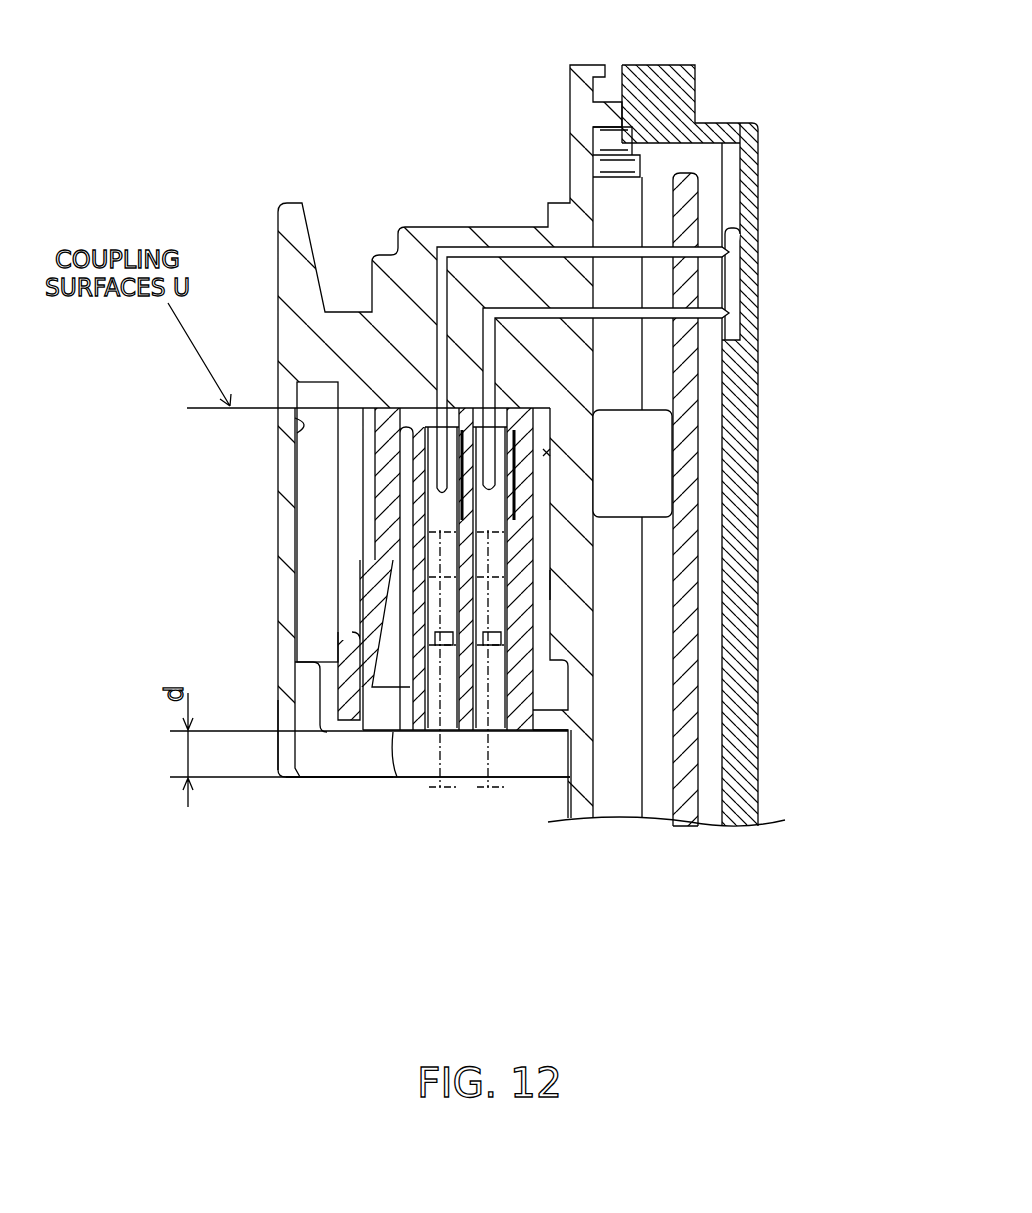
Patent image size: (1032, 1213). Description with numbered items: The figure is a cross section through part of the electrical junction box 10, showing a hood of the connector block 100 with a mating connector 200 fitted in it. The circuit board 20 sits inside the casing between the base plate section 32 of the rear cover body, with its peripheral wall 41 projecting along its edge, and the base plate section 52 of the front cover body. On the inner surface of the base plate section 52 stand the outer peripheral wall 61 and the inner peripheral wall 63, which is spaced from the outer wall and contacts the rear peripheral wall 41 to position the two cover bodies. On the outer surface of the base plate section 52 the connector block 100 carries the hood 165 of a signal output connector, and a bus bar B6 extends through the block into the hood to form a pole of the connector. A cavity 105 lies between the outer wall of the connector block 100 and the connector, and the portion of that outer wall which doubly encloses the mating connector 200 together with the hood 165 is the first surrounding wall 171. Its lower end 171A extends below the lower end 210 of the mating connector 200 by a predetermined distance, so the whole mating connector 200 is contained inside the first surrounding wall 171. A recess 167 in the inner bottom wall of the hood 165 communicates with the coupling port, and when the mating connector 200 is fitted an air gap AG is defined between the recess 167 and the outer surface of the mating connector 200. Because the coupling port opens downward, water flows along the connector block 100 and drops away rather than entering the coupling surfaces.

The electrical junction box 10 is at (793, 198).
The connector block 100 is at (415, 232).
The peripheral wall 61 is at (616, 128).
The peripheral wall 63 is at (612, 180).
The peripheral wall 41 is at (680, 65).
The base plate section 32 is at (748, 593).
The base plate section 52 is at (580, 768).
The circuit board 20 is at (690, 710).
The bus bar B6 is at (545, 312).
The cavity 105 is at (300, 422).
The hood 165 is at (345, 487).
The mating connector 200 is at (420, 553).
The air gap AG is at (546, 457).
The recess 167 is at (545, 585).
The first surrounding wall 171 is at (285, 703).
The lower end 171A is at (322, 779).
The lower end 210 is at (393, 779).